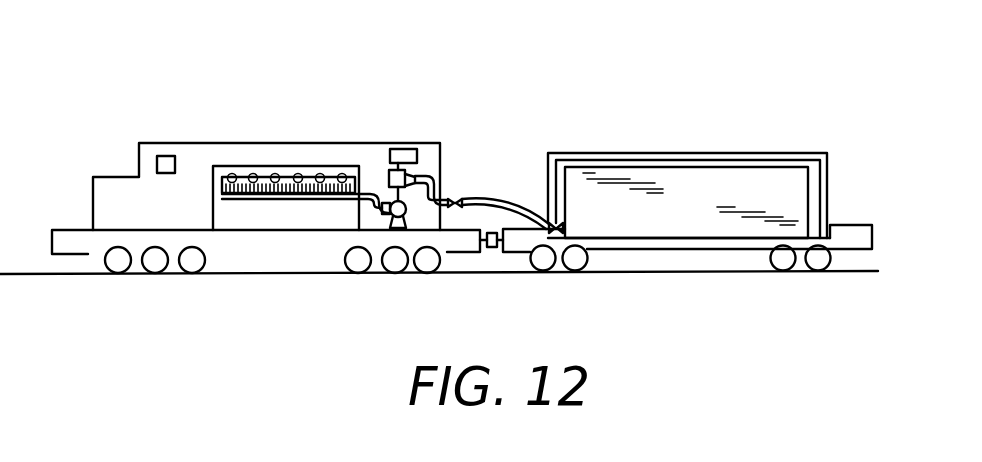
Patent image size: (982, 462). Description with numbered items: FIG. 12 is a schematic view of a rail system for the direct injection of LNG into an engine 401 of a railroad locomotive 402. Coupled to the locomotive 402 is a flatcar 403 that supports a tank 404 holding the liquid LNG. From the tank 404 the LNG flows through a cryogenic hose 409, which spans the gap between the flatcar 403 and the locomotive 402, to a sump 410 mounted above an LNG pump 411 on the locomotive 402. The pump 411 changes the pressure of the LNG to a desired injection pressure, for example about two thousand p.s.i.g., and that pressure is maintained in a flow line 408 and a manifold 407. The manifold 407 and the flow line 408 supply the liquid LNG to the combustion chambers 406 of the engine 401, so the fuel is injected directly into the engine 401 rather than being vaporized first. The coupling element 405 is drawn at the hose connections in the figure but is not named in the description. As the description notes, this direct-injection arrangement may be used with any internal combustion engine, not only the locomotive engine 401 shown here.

The engine 401 is at (265, 167).
The railroad locomotive 402 is at (168, 156).
The flatcar 403 is at (695, 243).
The tank 404 is at (700, 183).
The coupling / pump unit 405 is at (407, 149).
The combustion chambers 406 is at (238, 200).
The manifold 407 is at (299, 197).
The flow line 408 is at (366, 230).
The cryogenic hose 409 is at (470, 199).
The sump 410 is at (433, 173).
The LNG pump 411 is at (397, 228).